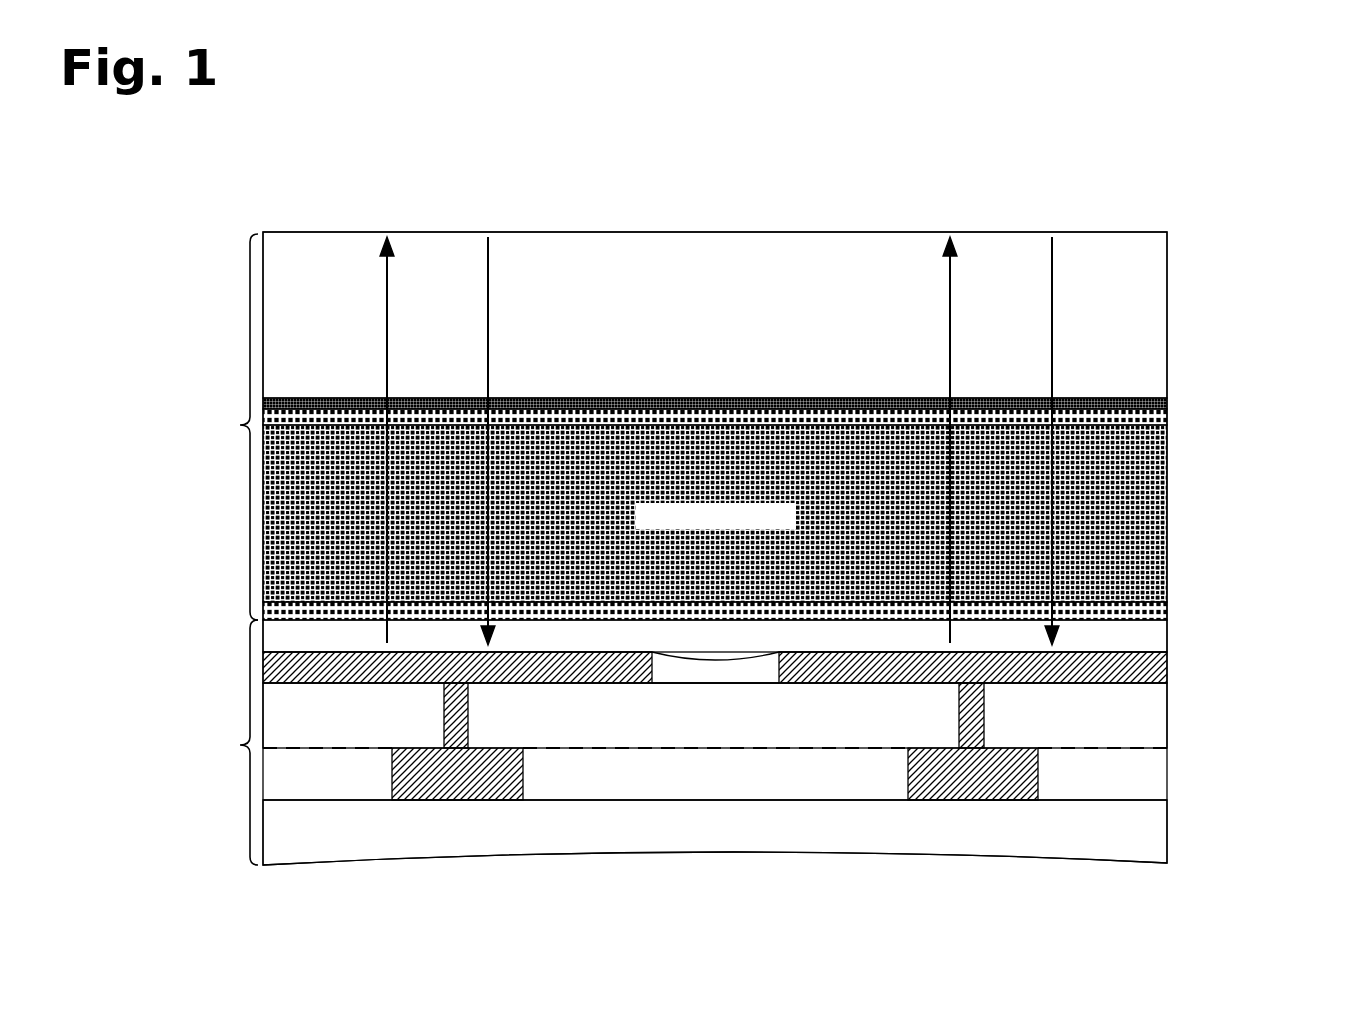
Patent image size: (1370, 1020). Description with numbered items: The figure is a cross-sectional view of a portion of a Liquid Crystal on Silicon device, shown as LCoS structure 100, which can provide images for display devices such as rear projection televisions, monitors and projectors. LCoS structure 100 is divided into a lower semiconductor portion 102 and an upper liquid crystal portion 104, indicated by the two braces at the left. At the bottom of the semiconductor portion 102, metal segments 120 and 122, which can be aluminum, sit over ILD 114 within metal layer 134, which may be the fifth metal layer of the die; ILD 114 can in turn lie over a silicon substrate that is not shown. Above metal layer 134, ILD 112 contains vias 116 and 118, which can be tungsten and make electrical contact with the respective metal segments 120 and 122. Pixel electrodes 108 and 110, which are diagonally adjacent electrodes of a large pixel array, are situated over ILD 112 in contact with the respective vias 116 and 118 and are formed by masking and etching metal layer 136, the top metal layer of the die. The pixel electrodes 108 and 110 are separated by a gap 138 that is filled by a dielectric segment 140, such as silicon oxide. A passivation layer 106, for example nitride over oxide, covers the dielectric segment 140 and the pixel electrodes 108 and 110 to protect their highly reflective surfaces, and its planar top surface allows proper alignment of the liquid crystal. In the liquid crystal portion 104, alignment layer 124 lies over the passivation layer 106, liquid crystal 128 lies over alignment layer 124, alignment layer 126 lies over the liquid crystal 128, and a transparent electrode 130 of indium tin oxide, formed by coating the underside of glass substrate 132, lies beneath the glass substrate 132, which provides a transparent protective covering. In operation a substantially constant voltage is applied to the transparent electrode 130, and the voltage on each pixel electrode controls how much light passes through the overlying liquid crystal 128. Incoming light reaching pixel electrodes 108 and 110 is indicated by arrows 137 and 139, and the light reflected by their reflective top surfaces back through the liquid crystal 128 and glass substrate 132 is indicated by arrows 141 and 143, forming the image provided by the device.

The LCoS structure 100 is at (1273, 148).
The semiconductor portion 102 is at (250, 668).
The liquid crystal portion 104 is at (250, 348).
The passivation layer 106 is at (1145, 636).
The pixel electrode 108 is at (392, 668).
The pixel electrode 110 is at (916, 668).
The interlayer dielectric 112 is at (1168, 710).
The interlayer dielectric 114 is at (1143, 834).
The via 116 is at (470, 706).
The via 118 is at (986, 706).
The metal segment 120 is at (456, 790).
The metal segment 122 is at (976, 790).
The alignment layer 124 is at (1145, 612).
The alignment layer 126 is at (1145, 418).
The liquid crystal 128 is at (1145, 520).
The transparent electrode 130 is at (1150, 405).
The glass substrate 132 is at (1145, 303).
The metal layer 134 is at (1168, 767).
The metal layer 136 is at (757, 696).
The arrow 137 is at (490, 365).
The gap 138 is at (752, 688).
The arrow 139 is at (1054, 365).
The dielectric segment 140 is at (680, 672).
The arrow 141 is at (385, 290).
The arrow 143 is at (948, 290).